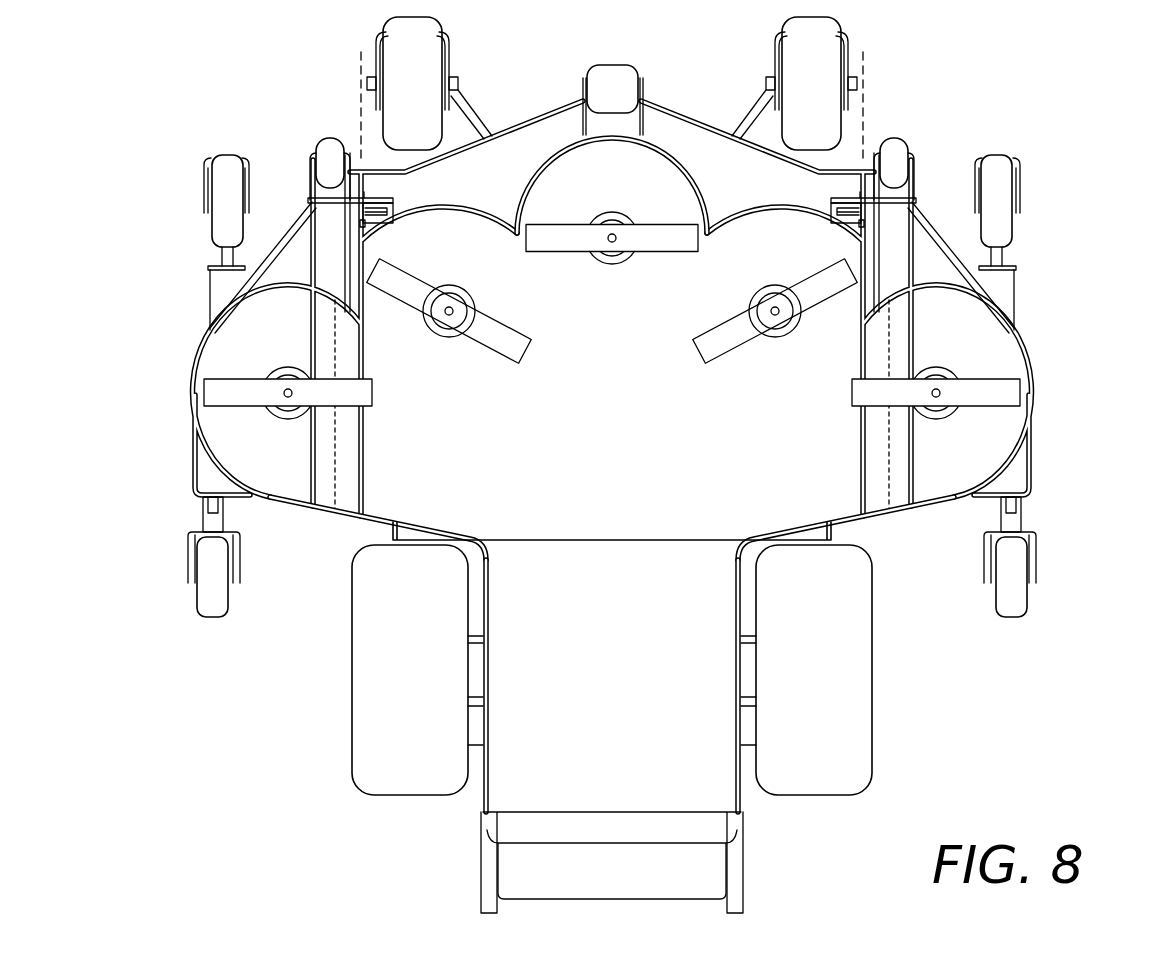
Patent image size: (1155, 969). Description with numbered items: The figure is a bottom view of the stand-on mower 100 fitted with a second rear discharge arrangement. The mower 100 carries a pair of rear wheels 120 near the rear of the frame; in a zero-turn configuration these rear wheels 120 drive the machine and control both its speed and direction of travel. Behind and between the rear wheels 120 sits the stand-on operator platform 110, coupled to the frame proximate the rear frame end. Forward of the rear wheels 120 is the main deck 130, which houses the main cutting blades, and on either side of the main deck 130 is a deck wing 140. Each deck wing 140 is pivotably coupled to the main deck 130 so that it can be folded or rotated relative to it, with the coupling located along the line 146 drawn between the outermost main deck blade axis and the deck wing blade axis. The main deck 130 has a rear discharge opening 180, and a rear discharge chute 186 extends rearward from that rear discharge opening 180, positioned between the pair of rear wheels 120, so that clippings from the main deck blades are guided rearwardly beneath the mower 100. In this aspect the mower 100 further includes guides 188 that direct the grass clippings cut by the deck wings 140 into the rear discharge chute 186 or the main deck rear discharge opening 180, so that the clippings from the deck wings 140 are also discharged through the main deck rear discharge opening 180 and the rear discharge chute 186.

The mower 100 is at (1044, 100).
The stand-on operator platform 110 is at (707, 890).
The rear wheels 120 is at (348, 771).
The main deck 130 is at (531, 128).
The deck wings 140 is at (193, 396).
The line 146 is at (361, 54).
The rear discharge opening 180 is at (621, 542).
The rear discharge chute 186 is at (612, 845).
The guides 188 is at (308, 504).